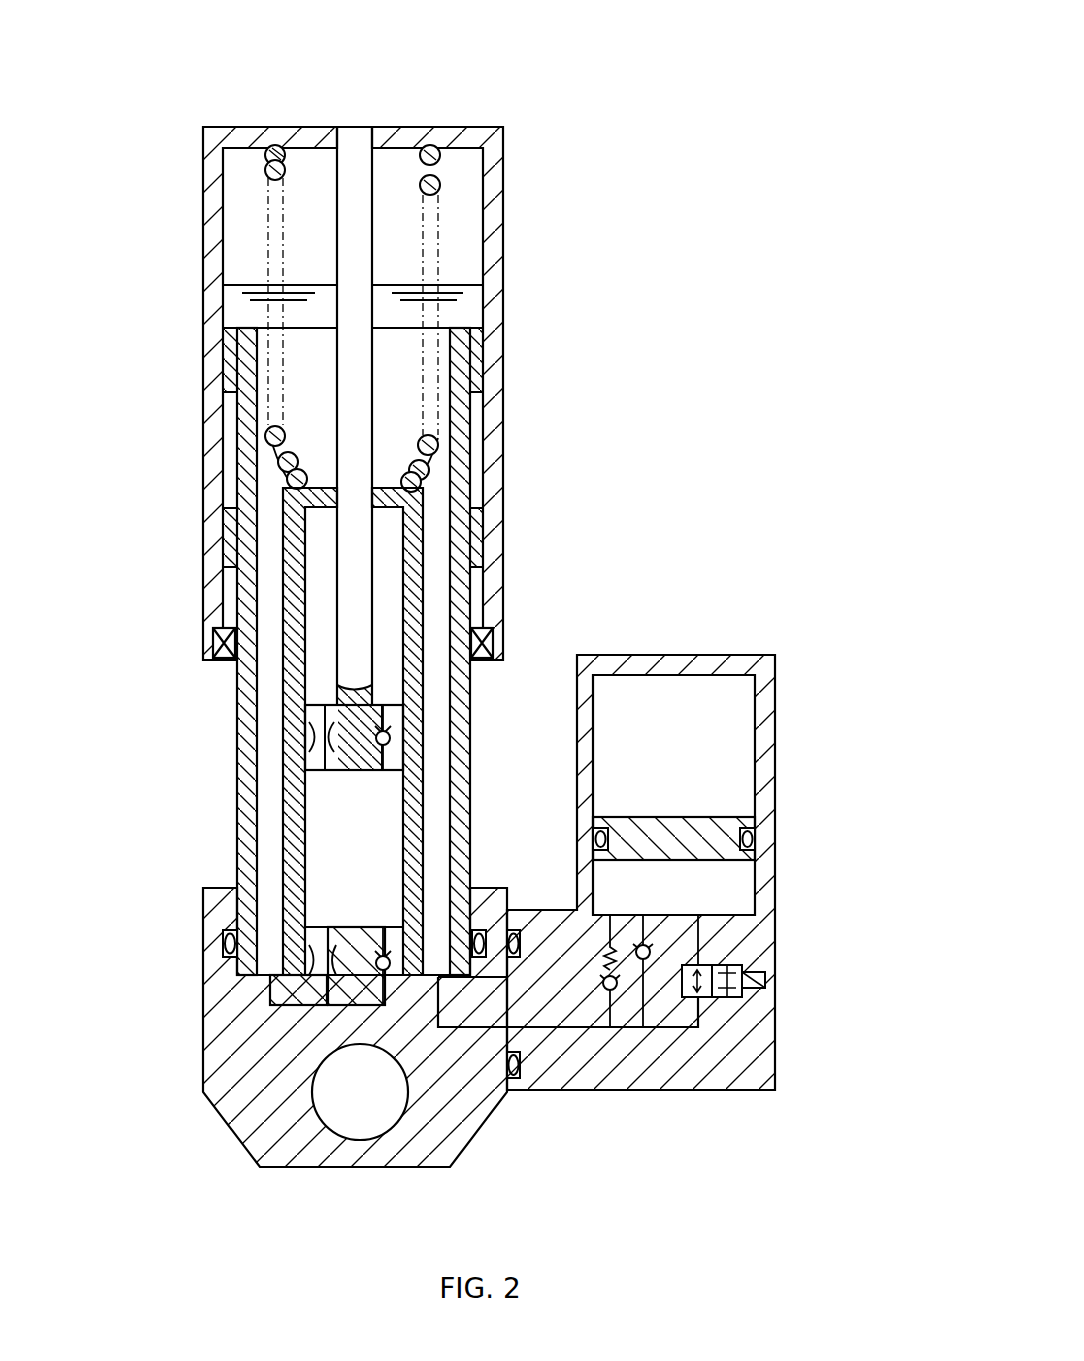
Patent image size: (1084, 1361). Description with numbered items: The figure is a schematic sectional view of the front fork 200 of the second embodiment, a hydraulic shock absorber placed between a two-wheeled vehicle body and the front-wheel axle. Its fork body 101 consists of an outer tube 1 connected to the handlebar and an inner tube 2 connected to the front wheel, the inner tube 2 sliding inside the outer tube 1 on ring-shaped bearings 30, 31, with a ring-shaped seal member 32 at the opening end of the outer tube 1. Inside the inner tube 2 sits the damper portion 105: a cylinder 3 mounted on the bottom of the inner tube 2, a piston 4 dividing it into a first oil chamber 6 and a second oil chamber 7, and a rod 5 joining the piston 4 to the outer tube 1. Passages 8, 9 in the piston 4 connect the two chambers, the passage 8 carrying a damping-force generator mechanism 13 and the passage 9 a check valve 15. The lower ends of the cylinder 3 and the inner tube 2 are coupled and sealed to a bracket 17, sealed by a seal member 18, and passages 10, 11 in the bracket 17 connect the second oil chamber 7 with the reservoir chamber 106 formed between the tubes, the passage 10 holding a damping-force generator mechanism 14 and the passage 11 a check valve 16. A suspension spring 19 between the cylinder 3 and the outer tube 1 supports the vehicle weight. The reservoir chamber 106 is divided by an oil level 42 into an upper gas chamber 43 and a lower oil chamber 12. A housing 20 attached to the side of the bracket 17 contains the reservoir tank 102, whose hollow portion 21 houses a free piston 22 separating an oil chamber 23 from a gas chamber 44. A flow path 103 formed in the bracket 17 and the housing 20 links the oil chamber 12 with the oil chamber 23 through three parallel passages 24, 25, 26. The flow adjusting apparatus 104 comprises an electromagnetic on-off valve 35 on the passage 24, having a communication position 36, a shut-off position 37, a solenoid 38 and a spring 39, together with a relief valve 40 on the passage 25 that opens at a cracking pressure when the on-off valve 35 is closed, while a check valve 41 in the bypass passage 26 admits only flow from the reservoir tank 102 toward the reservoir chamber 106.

The front fork 200 is at (512, 100).
The fork body 101 is at (590, 268).
The reservoir tank 102 is at (670, 833).
The flow path 103 is at (576, 1045).
The flow adjusting apparatus 104 is at (722, 1003).
The damper portion 105 is at (280, 742).
The reservoir chamber 106 is at (285, 272).
The outer tube 1 is at (505, 165).
The inner tube 2 is at (245, 822).
The cylinder 3 is at (292, 532).
The piston 4 is at (417, 734).
The rod 5 is at (358, 162).
The first oil chamber 6 is at (397, 624).
The second oil chamber 7 is at (321, 878).
The passage 8 is at (328, 772).
The passage 9 is at (452, 732).
The passage 10 is at (300, 1002).
The passage 11 is at (345, 1006).
The oil chamber 12 is at (296, 326).
The damping-force generator mechanism 13 is at (360, 772).
The damping-force generator mechanism 14 is at (290, 980).
The check valve 15 is at (392, 742).
The check valve 16 is at (386, 955).
The bracket 17 is at (480, 1105).
The seal member 18 is at (222, 945).
The suspension spring 19 is at (266, 170).
The housing 20 is at (672, 665).
The hollow portion 21 is at (598, 708).
The free piston 22 is at (740, 828).
The oil chamber 23 is at (653, 901).
The passage 24 is at (757, 1049).
The passage 25 is at (603, 1012).
The passage 26 is at (643, 1030).
The bearing 30 is at (485, 340).
The bearing 31 is at (478, 520).
The seal member 32 is at (214, 642).
The on-off valve 35 is at (748, 1009).
The communication position 36 is at (728, 1036).
The shut-off position 37 is at (745, 970).
The solenoid 38 is at (766, 982).
The spring 39 is at (676, 982).
The relief valve 40 is at (598, 972).
The check valve 41 is at (742, 942).
The oil level 42 is at (232, 290).
The gas chamber 43 is at (293, 222).
The gas chamber 44 is at (653, 766).